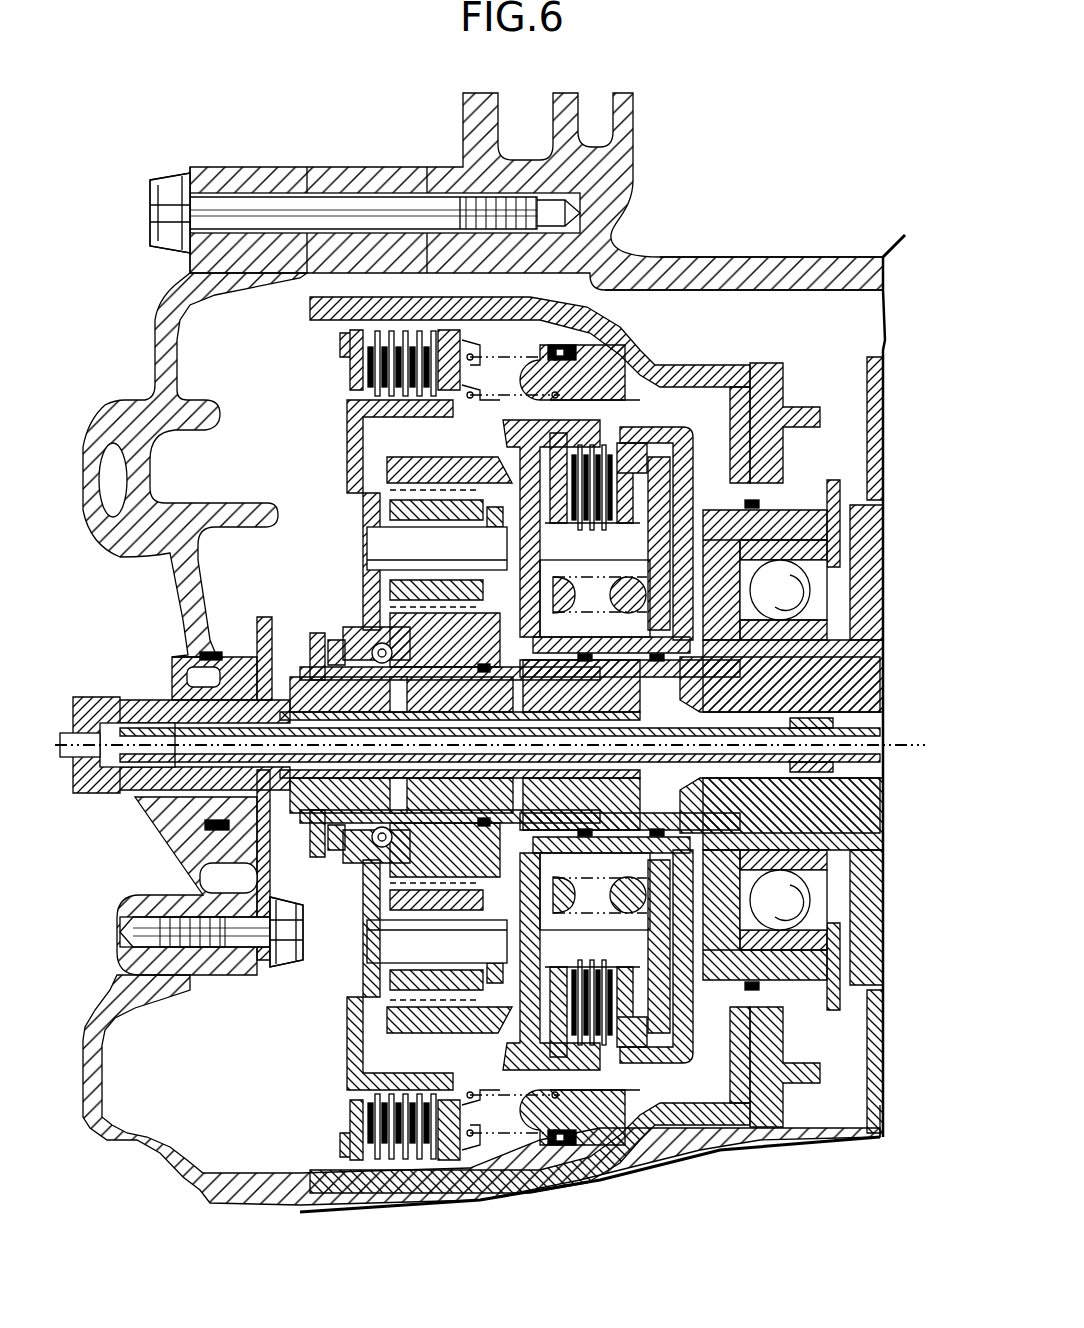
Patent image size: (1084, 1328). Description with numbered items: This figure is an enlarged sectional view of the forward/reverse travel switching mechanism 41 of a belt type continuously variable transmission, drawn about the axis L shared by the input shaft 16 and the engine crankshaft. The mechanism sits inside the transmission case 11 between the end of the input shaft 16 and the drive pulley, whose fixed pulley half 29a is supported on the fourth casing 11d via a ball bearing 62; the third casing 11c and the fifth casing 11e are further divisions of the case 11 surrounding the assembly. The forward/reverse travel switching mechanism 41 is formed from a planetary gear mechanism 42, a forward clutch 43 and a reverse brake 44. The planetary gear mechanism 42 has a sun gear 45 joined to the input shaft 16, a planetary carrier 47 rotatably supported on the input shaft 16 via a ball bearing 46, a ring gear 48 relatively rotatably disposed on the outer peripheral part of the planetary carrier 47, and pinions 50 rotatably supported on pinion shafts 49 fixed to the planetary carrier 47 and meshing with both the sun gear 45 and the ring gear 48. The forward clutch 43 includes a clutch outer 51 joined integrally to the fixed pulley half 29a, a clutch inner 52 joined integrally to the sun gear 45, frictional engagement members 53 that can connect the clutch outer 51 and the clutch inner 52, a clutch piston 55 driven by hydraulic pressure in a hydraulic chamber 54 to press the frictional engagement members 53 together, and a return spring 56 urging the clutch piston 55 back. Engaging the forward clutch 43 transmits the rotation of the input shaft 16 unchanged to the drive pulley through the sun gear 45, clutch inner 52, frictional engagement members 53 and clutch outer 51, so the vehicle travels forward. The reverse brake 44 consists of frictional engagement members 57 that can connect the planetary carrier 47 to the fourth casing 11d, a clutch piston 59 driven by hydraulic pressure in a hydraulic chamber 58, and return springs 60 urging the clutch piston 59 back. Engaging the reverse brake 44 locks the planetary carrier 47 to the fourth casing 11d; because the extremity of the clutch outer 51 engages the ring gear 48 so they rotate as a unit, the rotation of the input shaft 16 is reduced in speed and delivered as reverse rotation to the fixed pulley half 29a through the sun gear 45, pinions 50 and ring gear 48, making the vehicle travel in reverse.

The transmission case 11 is at (748, 243).
The third casing 11c is at (652, 260).
The fourth casing 11d is at (372, 165).
The fifth casing 11e is at (252, 170).
The input shaft 16 is at (885, 783).
The fixed pulley half 29a is at (866, 425).
The forward/reverse travel switching mechanism 41 is at (290, 363).
The planetary gear mechanism 42 is at (377, 449).
The forward clutch 43 is at (635, 478).
The reverse brake 44 is at (340, 358).
The sun gear 45 is at (387, 627).
The ball bearing 46 is at (338, 655).
The planetary carrier 47 is at (372, 511).
The ring gear 48 is at (475, 457).
The pinion shaft 49 is at (383, 546).
The pinion 50 is at (470, 503).
The clutch outer 51 is at (667, 470).
The clutch inner 52 is at (527, 563).
The frictional engagement members 53 is at (585, 523).
The hydraulic chamber 54 is at (668, 510).
The clutch piston 55 is at (660, 535).
The return spring 56 is at (640, 603).
The frictional engagement members 57 is at (425, 345).
The hydraulic chamber 58 is at (741, 383).
The clutch piston 59 is at (615, 370).
The return springs 60 is at (555, 345).
The ball bearing 62 is at (757, 907).
The axis L is at (887, 745).